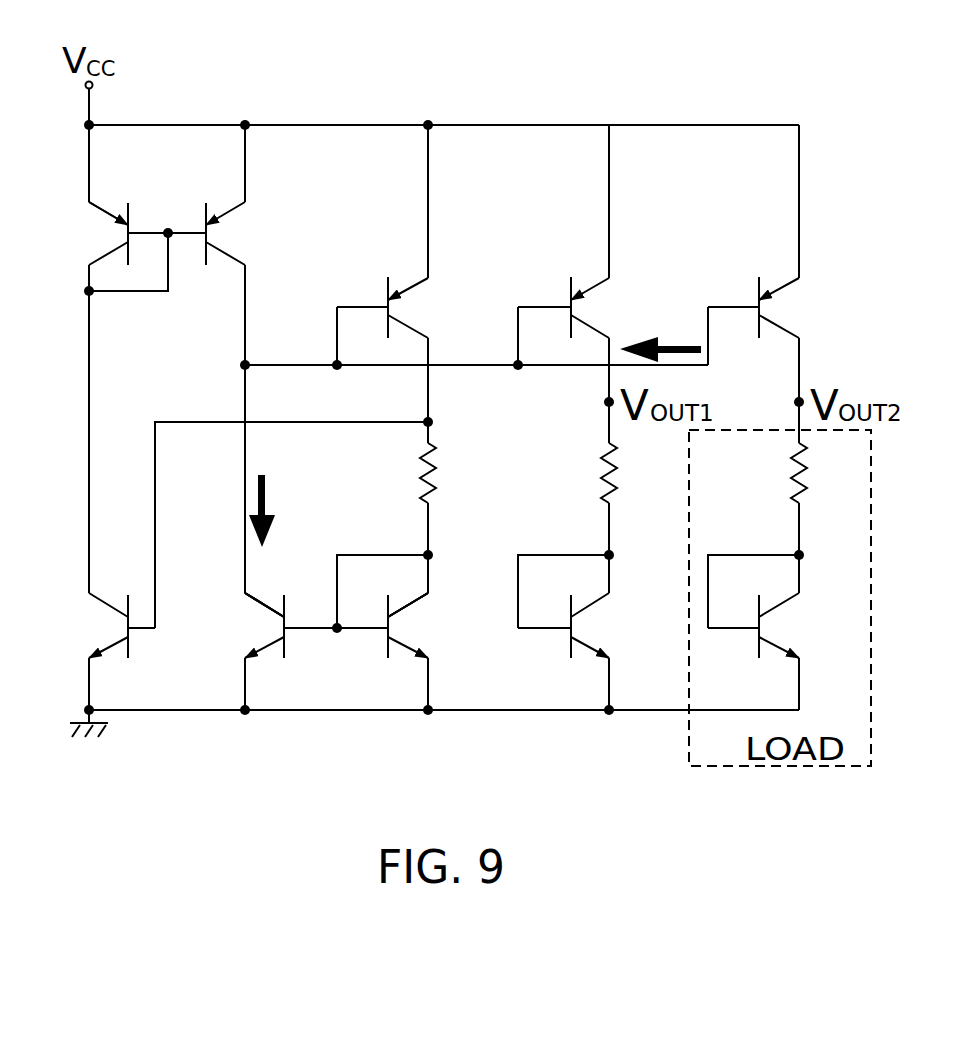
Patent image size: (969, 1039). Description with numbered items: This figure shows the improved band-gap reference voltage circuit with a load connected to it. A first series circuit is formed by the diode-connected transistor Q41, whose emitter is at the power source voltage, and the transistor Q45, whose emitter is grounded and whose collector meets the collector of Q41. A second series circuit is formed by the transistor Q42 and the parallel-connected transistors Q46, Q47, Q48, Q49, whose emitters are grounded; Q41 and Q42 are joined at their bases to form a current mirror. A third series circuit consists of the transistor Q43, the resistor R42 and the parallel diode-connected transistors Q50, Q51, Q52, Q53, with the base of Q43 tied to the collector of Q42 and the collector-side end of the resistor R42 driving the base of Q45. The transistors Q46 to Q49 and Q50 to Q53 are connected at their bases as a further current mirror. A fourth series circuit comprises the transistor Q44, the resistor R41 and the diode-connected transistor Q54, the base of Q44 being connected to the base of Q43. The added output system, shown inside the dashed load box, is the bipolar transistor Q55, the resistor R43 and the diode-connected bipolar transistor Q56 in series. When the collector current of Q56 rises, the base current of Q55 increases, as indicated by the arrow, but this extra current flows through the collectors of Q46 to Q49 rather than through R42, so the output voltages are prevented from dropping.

The diode-connected transistor Q41 is at (71, 195).
The transistor Q42 is at (253, 195).
The transistor Q43 is at (402, 231).
The transistor Q44 is at (596, 231).
The transistor Q45 is at (74, 625).
The transistor Q46 is at (227, 595).
The transistor Q47 is at (227, 619).
The transistor Q48 is at (227, 629).
The transistor Q49 is at (227, 653).
The diode-connected transistor Q50 is at (445, 593).
The diode-connected transistor Q51 is at (445, 617).
The diode-connected transistor Q52 is at (445, 627).
The diode-connected transistor Q53 is at (445, 651).
The diode-connected transistor Q54 is at (595, 625).
The bipolar transistor Q55 is at (787, 231).
The diode-connected bipolar transistor Q56 is at (787, 625).
The resistor R41 is at (642, 473).
The resistor R42 is at (462, 473).
The resistor R43 is at (831, 473).